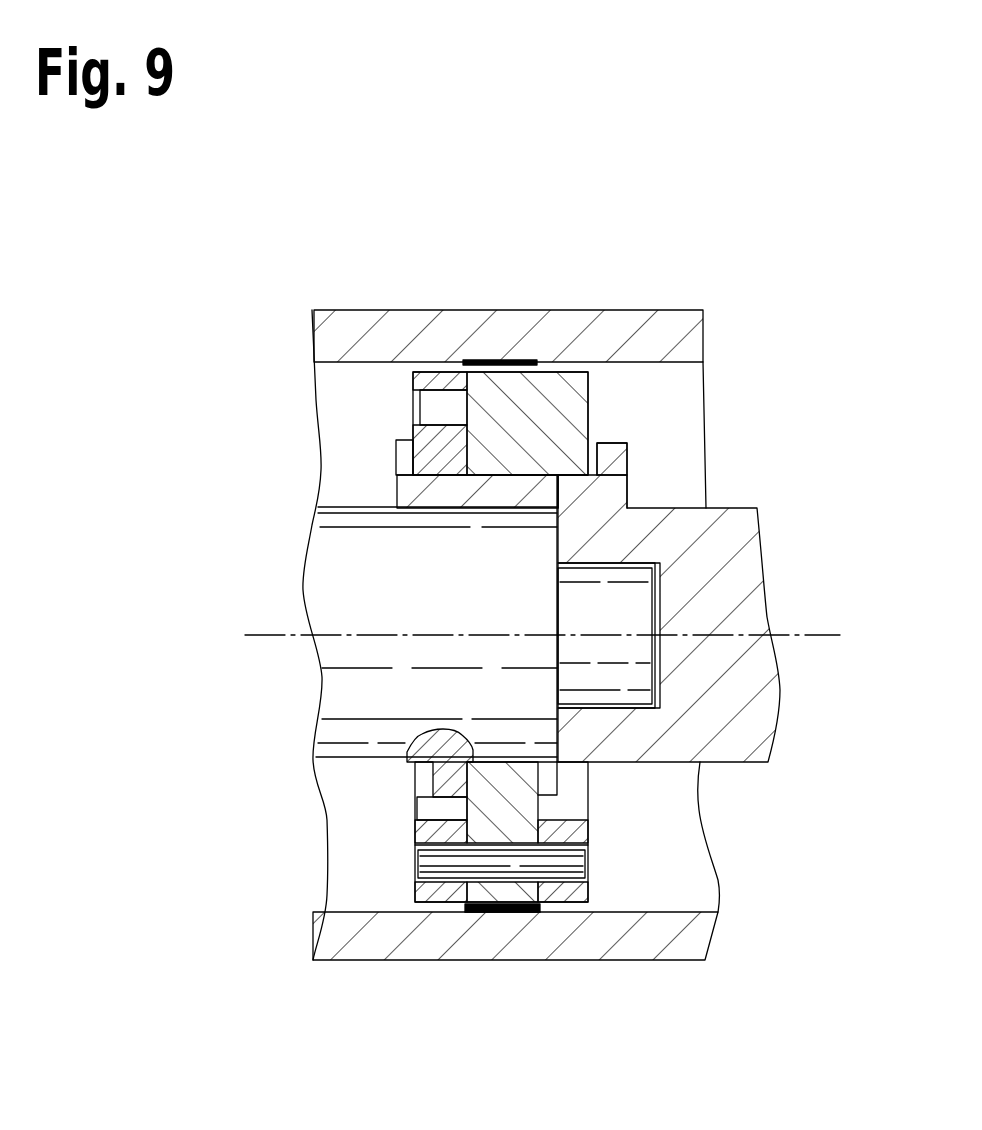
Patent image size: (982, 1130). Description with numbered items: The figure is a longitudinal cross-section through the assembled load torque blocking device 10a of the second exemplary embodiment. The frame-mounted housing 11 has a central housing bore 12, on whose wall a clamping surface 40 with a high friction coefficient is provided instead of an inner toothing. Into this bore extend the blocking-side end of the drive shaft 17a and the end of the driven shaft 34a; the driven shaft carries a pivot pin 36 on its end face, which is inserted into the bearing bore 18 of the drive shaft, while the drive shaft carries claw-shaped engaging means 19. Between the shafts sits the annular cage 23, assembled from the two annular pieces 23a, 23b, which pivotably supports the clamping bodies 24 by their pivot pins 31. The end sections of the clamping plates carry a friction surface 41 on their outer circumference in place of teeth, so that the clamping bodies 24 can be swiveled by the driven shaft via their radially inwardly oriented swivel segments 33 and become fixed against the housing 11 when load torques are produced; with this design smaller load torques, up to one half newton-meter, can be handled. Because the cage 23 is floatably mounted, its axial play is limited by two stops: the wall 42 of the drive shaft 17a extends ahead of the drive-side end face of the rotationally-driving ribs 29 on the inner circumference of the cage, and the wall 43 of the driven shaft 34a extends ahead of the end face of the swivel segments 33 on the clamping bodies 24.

The load torque blocking device 10a is at (722, 302).
The housing 11 is at (603, 323).
The housing bore 12 is at (347, 887).
The drive shaft 17a is at (747, 590).
The bearing bore 18 is at (665, 683).
The engaging means 19 is at (463, 490).
The annular cage 23 is at (494, 394).
The annular piece 23a is at (427, 467).
The annular piece 23b is at (577, 405).
The clamping body 24 is at (530, 808).
The rotationally-driving rib 29 is at (593, 423).
The pivot pin 31 is at (562, 865).
The swivel segment 33 is at (500, 787).
The driven shaft 34a is at (318, 575).
The pivot pin 36 is at (663, 657).
The clamping surface 40 is at (492, 362).
The friction surface 41 is at (478, 905).
The wall 42 is at (613, 458).
The wall 43 is at (437, 782).